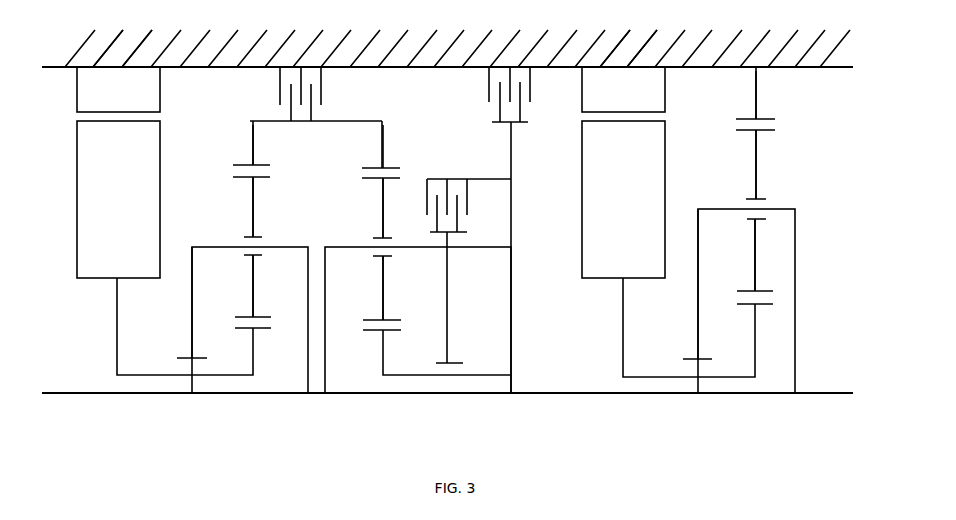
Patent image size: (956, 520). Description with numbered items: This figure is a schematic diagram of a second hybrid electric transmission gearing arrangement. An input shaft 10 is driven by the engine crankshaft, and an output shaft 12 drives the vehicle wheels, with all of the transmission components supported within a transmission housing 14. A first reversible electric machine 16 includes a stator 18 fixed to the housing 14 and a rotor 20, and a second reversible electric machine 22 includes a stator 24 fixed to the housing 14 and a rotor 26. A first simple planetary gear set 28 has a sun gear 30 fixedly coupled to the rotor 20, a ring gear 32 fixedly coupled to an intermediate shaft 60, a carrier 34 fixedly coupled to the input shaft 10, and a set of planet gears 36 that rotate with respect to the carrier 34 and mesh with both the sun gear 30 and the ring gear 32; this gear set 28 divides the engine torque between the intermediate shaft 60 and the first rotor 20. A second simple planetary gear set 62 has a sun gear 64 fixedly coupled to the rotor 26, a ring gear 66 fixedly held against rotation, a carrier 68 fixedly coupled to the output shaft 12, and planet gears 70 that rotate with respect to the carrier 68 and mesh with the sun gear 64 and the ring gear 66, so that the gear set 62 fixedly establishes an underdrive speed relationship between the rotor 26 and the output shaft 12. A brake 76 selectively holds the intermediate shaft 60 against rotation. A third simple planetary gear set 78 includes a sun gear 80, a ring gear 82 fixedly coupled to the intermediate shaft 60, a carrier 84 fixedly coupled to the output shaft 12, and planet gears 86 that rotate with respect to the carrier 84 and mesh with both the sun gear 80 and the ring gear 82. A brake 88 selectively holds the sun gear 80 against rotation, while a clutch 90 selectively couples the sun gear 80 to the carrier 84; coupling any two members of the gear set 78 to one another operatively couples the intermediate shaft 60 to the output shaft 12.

The input shaft 10 is at (83, 393).
The output shaft 12 is at (830, 393).
The transmission housing 14 is at (340, 40).
The first reversible electric machine 16 is at (122, 38).
The stator 18 is at (77, 85).
The rotor 20 is at (160, 203).
The second reversible electric machine 22 is at (628, 38).
The stator 24 is at (583, 90).
The rotor 26 is at (665, 180).
The first simple planetary gear set 28 is at (250, 339).
The sun gear 30 is at (253, 365).
The ring gear 32 is at (250, 133).
The carrier 34 is at (192, 301).
The planet gears 36 is at (255, 218).
The intermediate shaft 60 is at (338, 121).
The second simple planetary gear set 62 is at (746, 319).
The sun gear 64 is at (755, 357).
The ring gear 66 is at (750, 83).
The carrier 68 is at (698, 305).
The planet gears 70 is at (756, 178).
The brake 76 is at (279, 97).
The third simple planetary gear set 78 is at (418, 342).
The sun gear 80 is at (383, 360).
The ring gear 82 is at (380, 140).
The carrier 84 is at (448, 270).
The planet gears 86 is at (383, 218).
The brake 88 is at (488, 95).
The clutch 90 is at (470, 202).